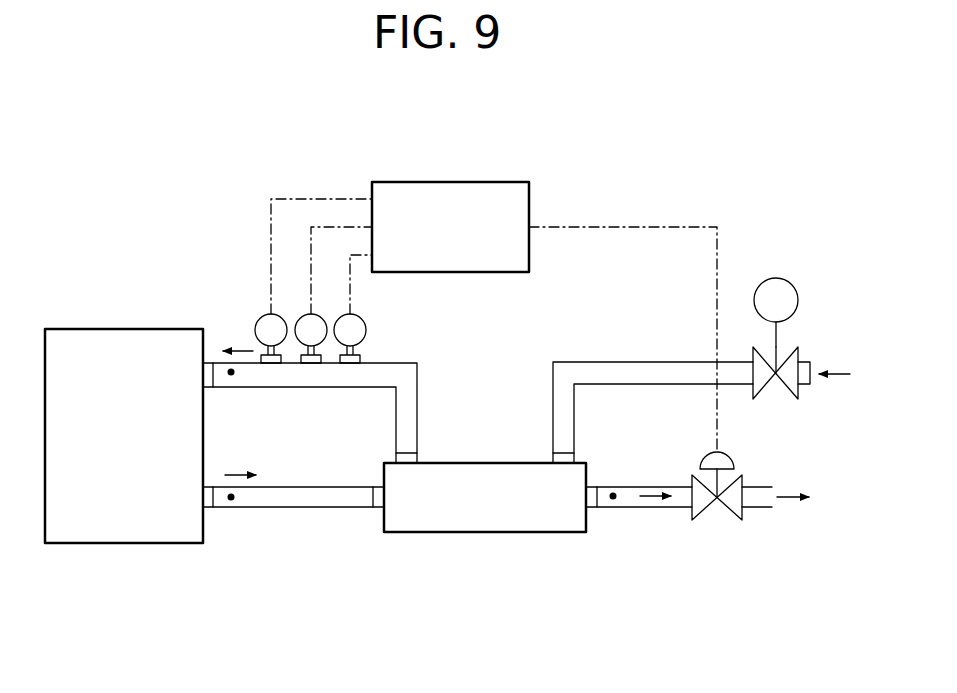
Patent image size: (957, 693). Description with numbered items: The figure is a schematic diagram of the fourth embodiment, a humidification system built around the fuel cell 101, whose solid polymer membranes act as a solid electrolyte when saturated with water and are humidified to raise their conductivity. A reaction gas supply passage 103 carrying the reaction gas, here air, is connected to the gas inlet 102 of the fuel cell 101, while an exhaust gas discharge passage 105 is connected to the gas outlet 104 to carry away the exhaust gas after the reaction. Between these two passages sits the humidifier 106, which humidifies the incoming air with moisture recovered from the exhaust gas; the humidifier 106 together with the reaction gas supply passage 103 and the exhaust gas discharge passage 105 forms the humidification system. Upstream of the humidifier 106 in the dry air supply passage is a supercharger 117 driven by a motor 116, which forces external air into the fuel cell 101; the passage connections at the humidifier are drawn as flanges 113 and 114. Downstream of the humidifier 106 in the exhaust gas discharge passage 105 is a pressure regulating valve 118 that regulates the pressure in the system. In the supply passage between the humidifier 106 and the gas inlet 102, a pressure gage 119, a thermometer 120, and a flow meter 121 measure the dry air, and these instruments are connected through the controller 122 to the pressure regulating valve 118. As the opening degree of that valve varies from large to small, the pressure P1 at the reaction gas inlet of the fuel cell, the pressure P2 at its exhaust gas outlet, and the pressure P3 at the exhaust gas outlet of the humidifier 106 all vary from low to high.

The fuel cell 101 is at (132, 535).
The gas inlet 102 is at (210, 363).
The reaction gas supply passage 103 is at (413, 407).
The gas outlet 104 is at (208, 510).
The exhaust gas discharge passage 105 is at (327, 507).
The humidifier 106 is at (492, 520).
The flange 113 is at (418, 455).
The flange 114 is at (377, 508).
The motor 116 is at (772, 278).
The supercharger 117 is at (790, 347).
The pressure regulating valve 118 is at (729, 510).
The pressure gage 119 is at (263, 312).
The thermometer 120 is at (311, 312).
The flow meter 121 is at (367, 322).
The controller 122 is at (462, 182).
The pressure at the reaction gas inlet of the fuel cell P1 is at (231, 375).
The pressure at the exhaust gas outlet of the fuel cell P2 is at (231, 500).
The pressure at the exhaust gas outlet of the humidifier P3 is at (613, 493).